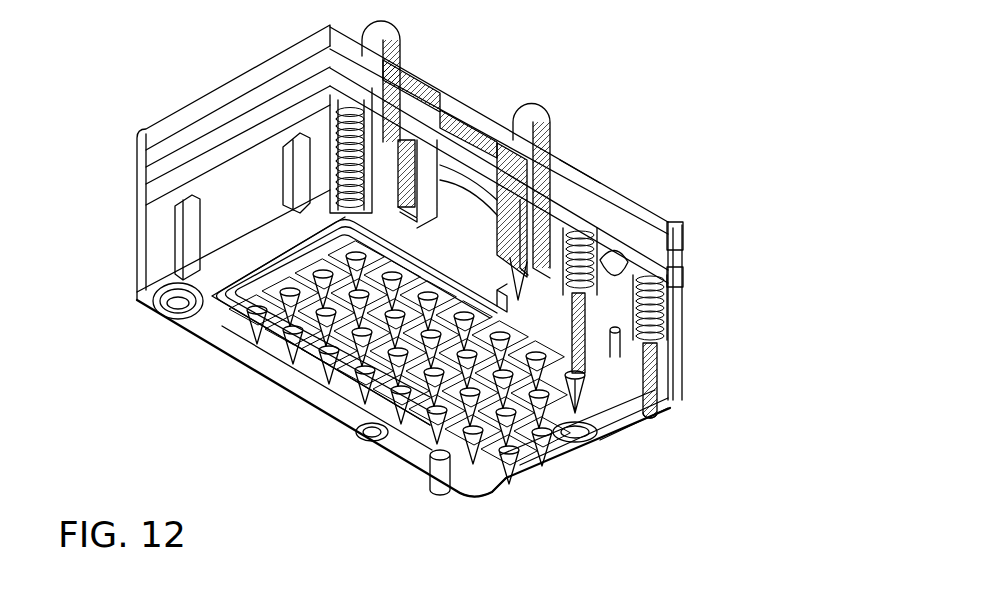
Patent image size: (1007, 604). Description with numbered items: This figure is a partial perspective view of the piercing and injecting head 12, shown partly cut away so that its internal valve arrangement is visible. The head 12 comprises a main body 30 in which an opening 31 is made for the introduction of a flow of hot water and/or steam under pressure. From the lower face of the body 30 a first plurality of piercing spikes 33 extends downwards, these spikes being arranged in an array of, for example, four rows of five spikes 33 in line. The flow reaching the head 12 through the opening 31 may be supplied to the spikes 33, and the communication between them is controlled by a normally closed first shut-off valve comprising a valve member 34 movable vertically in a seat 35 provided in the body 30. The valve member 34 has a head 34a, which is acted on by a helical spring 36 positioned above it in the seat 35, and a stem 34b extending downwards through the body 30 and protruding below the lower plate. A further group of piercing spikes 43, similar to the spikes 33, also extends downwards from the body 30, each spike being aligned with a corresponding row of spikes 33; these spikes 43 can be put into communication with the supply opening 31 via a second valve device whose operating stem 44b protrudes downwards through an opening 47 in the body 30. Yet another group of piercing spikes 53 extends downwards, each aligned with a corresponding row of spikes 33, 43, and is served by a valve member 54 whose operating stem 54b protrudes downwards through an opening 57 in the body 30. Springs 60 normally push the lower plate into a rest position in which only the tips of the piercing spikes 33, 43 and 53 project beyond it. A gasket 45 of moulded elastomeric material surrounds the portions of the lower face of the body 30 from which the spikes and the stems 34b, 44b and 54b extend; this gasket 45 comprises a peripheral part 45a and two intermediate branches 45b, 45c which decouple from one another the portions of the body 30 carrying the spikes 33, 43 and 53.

The head 12 is at (613, 163).
The main body 30 is at (163, 225).
The opening 31 is at (683, 277).
The piercing spikes 33 is at (238, 250).
The valve member 34 is at (495, 225).
The head 34a is at (627, 258).
The stem 34b is at (610, 428).
The seat 35 is at (580, 228).
The helical spring 36 is at (594, 242).
The piercing spikes 43 is at (440, 490).
The operating stem 44b is at (428, 71).
The gasket 45 is at (233, 333).
The peripheral part 45a is at (272, 215).
The intermediate branch 45b is at (360, 455).
The intermediate branch 45c is at (472, 497).
The opening 47 is at (531, 139).
The piercing spikes 53 is at (560, 470).
The valve member 54 is at (683, 380).
The operating stem 54b is at (668, 415).
The opening 57 is at (668, 412).
The springs 60 is at (163, 318).